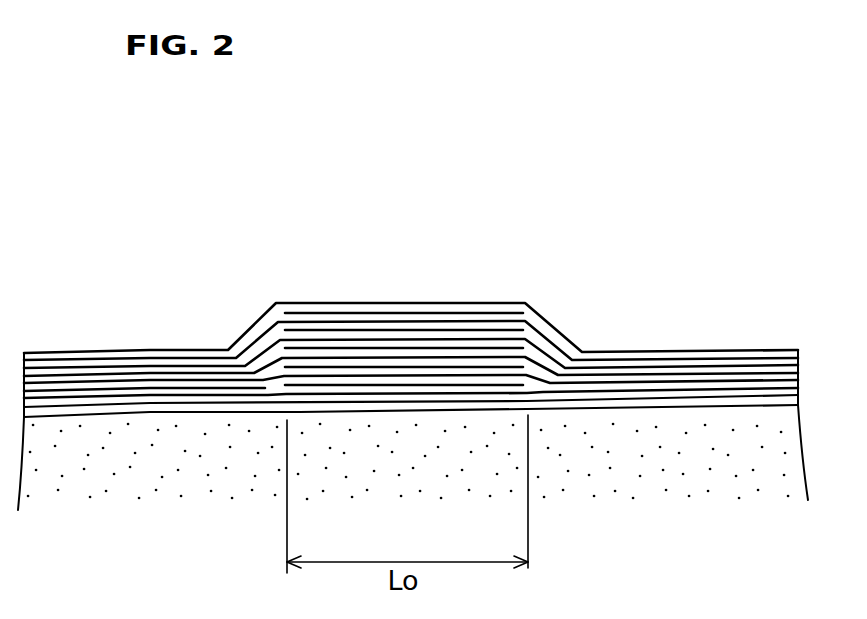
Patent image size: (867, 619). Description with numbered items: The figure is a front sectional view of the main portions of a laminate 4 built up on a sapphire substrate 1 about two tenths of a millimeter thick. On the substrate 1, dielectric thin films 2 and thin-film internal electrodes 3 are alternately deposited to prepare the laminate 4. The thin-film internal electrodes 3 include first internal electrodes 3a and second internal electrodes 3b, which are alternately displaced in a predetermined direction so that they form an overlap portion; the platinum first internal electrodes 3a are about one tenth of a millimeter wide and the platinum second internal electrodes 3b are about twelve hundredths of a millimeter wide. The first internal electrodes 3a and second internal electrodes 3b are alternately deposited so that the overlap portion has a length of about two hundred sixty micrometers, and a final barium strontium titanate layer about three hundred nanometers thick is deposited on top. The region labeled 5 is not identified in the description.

The sapphire substrate 1 is at (657, 463).
The dielectric thin films 2 is at (713, 380).
The thin-film internal electrodes 3 is at (411, 419).
The first internal electrodes 3a is at (212, 376).
The second internal electrodes 3b is at (644, 380).
The laminate 4 is at (417, 301).
The laminated capacitor portion 5 is at (411, 360).